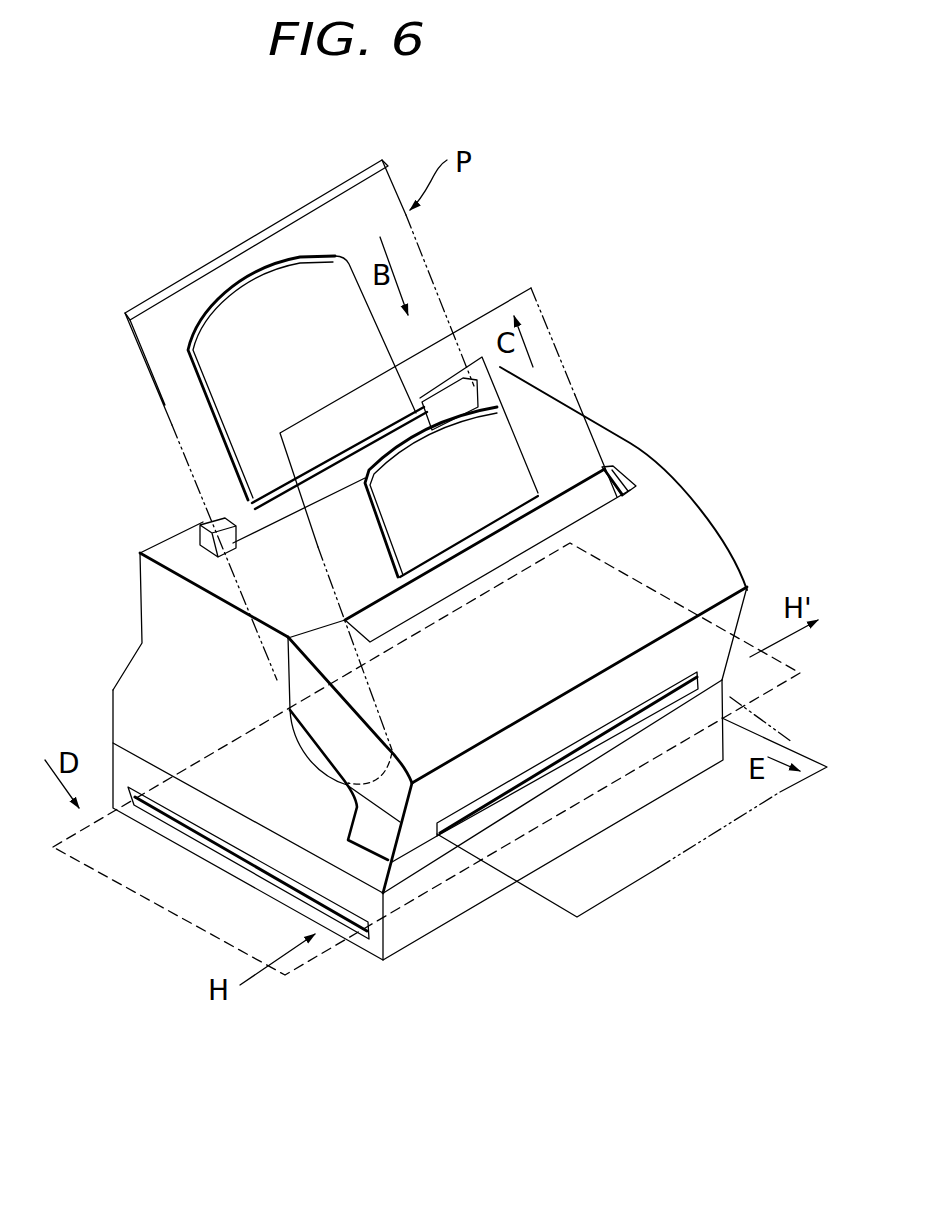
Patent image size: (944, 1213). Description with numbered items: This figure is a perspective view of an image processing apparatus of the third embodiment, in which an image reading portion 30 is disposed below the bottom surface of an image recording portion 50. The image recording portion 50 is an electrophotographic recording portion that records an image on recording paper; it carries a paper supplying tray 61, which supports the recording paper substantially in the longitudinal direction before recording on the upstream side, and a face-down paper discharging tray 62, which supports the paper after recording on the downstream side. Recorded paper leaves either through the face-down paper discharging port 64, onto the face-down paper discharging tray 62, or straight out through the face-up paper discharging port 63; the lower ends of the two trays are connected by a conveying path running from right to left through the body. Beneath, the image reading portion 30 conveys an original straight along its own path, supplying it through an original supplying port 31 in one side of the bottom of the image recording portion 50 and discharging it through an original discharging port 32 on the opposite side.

The image reading portion 30 is at (495, 905).
The original supplying port 31 is at (203, 833).
The original discharging port 32 is at (737, 693).
The image recording portion 50 is at (703, 497).
The paper supplying tray 61 is at (300, 283).
The face-down paper discharging tray 62 is at (505, 452).
The face-up paper discharging port 63 is at (617, 723).
The face-down paper discharging port 64 is at (587, 496).